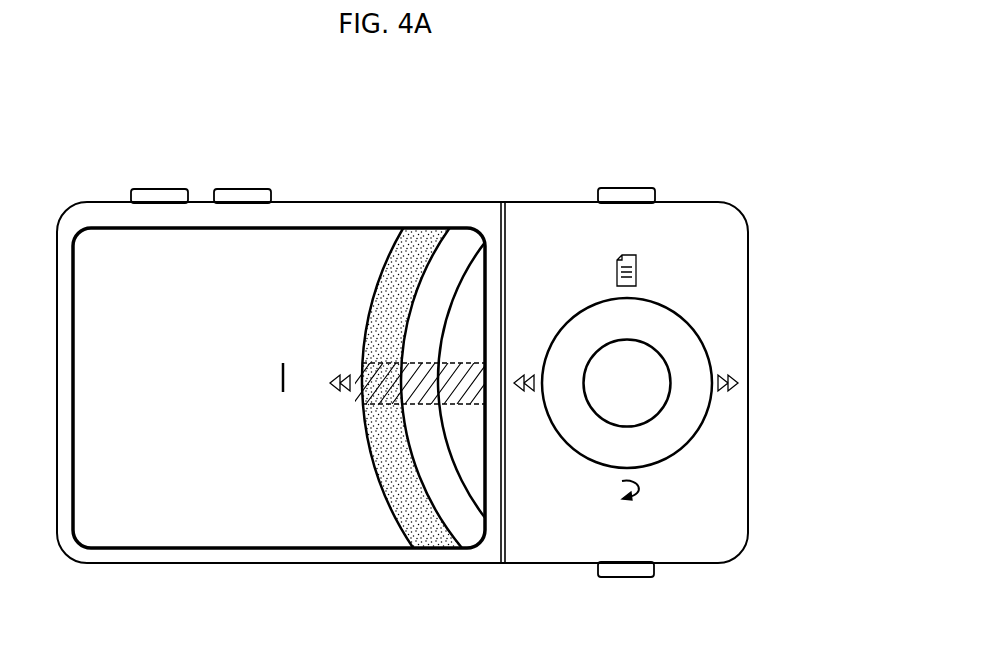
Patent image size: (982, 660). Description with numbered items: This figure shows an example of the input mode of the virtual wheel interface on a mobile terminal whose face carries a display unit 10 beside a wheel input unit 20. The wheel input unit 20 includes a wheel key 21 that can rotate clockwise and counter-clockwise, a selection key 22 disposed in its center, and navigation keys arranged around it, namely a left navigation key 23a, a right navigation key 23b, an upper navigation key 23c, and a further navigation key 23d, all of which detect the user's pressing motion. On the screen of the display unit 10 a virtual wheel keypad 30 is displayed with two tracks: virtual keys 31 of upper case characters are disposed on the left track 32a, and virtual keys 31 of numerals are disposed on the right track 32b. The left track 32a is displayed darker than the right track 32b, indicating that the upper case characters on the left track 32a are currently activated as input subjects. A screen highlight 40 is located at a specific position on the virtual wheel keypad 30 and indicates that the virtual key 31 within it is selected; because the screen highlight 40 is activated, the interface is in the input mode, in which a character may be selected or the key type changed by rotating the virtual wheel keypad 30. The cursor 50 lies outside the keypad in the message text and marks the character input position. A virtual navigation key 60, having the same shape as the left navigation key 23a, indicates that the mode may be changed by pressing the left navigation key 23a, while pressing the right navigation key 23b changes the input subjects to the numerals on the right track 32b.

The display unit 10 is at (117, 227).
The wheel input unit 20 is at (668, 391).
The wheel key 21 is at (697, 403).
The selection key 22 is at (655, 372).
The left navigation key 23a is at (519, 398).
The right navigation key 23b is at (740, 383).
The upper navigation key 23c is at (628, 255).
The navigation key 23d is at (642, 487).
The virtual wheel keypad 30 is at (395, 387).
The virtual keys 31 is at (424, 322).
The left track 32a is at (428, 232).
The right track 32b is at (469, 233).
The screen highlight 40 is at (382, 362).
The cursor 50 is at (280, 384).
The virtual navigation key 60 is at (336, 393).